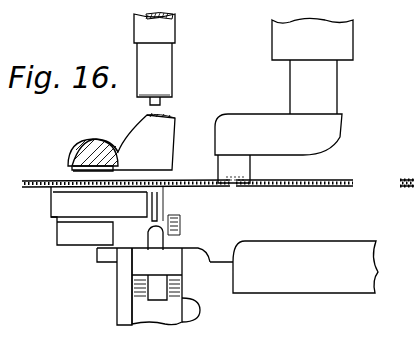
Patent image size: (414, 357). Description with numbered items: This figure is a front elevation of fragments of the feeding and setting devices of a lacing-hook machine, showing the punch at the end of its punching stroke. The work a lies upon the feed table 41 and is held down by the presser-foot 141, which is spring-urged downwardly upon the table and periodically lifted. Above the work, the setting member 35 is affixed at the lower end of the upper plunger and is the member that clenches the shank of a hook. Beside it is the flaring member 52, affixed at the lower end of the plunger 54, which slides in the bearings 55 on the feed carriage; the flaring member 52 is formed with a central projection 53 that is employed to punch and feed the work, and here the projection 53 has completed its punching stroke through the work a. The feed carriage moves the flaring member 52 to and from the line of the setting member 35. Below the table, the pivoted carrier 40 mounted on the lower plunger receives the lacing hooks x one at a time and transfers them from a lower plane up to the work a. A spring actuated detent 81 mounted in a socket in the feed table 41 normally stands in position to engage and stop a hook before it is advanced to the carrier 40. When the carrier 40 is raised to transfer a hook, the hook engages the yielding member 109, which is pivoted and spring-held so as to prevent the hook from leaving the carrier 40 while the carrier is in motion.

The plunger 54 is at (173, 28).
The setting member 35 is at (165, 72).
The bearings 55 is at (312, 39).
The flaring member 52 is at (316, 178).
The presser-foot 141 is at (121, 142).
The work a is at (33, 182).
The spring actuated detent 81 is at (173, 216).
The yielding member 109 is at (152, 210).
The lacing hook x is at (150, 237).
The carrier 40 is at (153, 286).
The central projection 53 is at (234, 187).
The feed table 41 is at (324, 187).